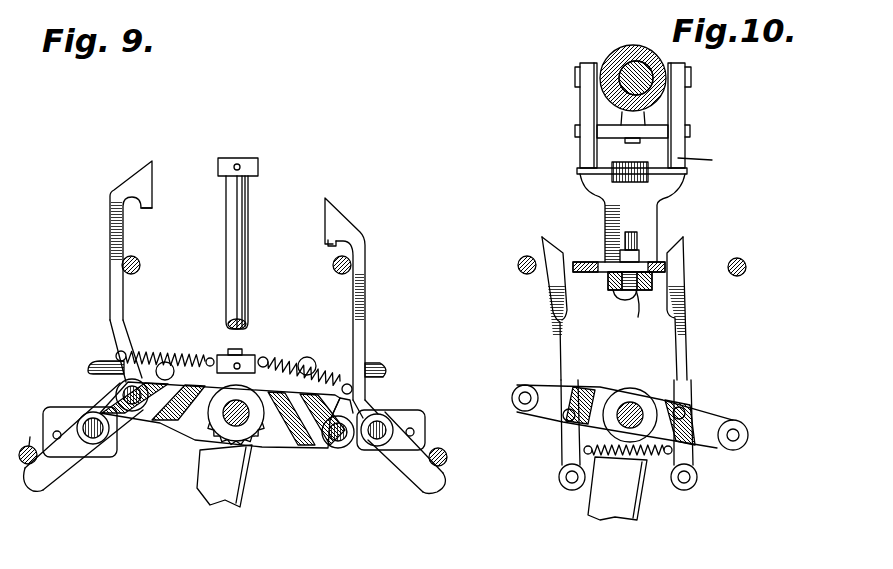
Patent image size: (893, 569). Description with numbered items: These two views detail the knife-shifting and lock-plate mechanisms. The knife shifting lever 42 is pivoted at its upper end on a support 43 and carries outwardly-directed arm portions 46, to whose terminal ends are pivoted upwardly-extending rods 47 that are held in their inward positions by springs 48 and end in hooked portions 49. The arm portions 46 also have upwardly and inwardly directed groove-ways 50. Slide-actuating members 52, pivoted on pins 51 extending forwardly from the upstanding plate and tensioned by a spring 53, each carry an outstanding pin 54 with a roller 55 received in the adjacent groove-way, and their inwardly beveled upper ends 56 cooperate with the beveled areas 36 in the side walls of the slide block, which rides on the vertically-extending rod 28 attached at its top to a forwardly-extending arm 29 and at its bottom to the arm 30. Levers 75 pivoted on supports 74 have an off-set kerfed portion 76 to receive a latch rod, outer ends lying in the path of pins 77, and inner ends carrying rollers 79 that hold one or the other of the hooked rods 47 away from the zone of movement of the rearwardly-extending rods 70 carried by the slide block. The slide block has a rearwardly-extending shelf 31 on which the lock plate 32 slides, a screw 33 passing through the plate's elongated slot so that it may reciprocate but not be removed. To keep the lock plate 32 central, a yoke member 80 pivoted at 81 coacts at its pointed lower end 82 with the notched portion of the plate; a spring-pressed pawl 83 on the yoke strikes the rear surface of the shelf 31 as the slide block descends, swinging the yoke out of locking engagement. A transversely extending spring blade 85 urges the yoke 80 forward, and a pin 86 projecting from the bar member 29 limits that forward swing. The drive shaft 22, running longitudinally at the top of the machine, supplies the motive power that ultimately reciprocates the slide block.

In FIG. 10, the drive shaft 22 is at (628, 53).
In FIG. 9, the vertically-extending rod 28 is at (250, 270).
In FIG. 9, the forwardly-extending arm 29 is at (258, 171).
In FIG. 10, the forwardly-extending arm 29 is at (612, 180).
In FIG. 9, the arm 30 is at (245, 355).
In FIG. 10, the shelf 31 is at (612, 290).
In FIG. 10, the lock plate 32 is at (608, 253).
In FIG. 10, the screw 33 is at (640, 253).
In FIG. 10, the beveled areas 36 is at (577, 272).
In FIG. 9, the knife shifting lever 42 is at (242, 488).
In FIG. 10, the knife shifting lever 42 is at (636, 506).
In FIG. 9, the support 43 is at (222, 420).
In FIG. 10, the support 43 is at (632, 400).
In FIG. 9, the arm portions 46 is at (130, 412).
In FIG. 10, the arm portions 46 is at (547, 393).
In FIG. 9, the upwardly-extending rods 47 is at (118, 305).
In FIG. 9, the springs 48 is at (184, 345).
In FIG. 9, the hooked portions 49 is at (150, 208).
In FIG. 9, the groove-ways 50 is at (160, 423).
In FIG. 10, the groove-ways 50 is at (588, 393).
In FIG. 10, the pins 51 is at (568, 482).
In FIG. 10, the slide-actuating members 52 is at (556, 352).
In FIG. 10, the spring 53 is at (612, 457).
In FIG. 10, the outstanding pin 54 is at (565, 421).
In FIG. 10, the roller 55 is at (558, 432).
In FIG. 10, the beveled upper ends 56 is at (560, 232).
In FIG. 9, the rearwardly-extending rods 70 is at (141, 266).
In FIG. 10, the rearwardly-extending rods 70 is at (518, 272).
In FIG. 9, the supports 74 is at (60, 412).
In FIG. 9, the levers 75 is at (108, 412).
In FIG. 9, the off-set kerfed portion 76 is at (100, 361).
In FIG. 9, the pins 77 is at (29, 439).
In FIG. 9, the rollers 79 is at (172, 364).
In FIG. 10, the yoke member 80 is at (708, 161).
In FIG. 10, the pivot 81 is at (652, 115).
In FIG. 10, the pointed lower end 82 is at (645, 315).
In FIG. 10, the spring-pressed pawl 83 is at (637, 234).
In FIG. 10, the spring blade 85 is at (657, 130).
In FIG. 10, the pin 86 is at (687, 172).